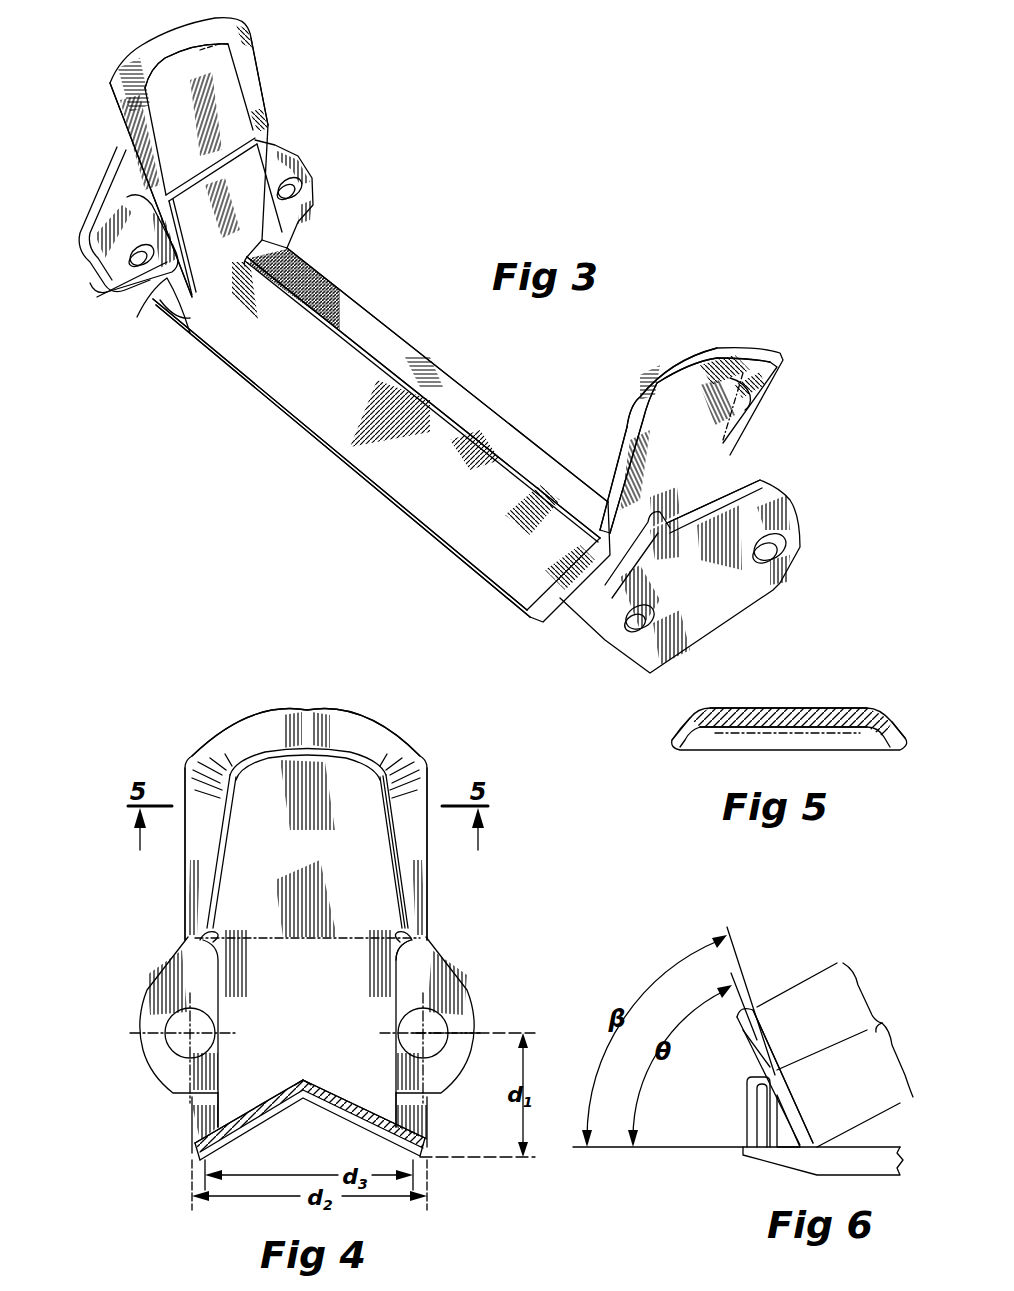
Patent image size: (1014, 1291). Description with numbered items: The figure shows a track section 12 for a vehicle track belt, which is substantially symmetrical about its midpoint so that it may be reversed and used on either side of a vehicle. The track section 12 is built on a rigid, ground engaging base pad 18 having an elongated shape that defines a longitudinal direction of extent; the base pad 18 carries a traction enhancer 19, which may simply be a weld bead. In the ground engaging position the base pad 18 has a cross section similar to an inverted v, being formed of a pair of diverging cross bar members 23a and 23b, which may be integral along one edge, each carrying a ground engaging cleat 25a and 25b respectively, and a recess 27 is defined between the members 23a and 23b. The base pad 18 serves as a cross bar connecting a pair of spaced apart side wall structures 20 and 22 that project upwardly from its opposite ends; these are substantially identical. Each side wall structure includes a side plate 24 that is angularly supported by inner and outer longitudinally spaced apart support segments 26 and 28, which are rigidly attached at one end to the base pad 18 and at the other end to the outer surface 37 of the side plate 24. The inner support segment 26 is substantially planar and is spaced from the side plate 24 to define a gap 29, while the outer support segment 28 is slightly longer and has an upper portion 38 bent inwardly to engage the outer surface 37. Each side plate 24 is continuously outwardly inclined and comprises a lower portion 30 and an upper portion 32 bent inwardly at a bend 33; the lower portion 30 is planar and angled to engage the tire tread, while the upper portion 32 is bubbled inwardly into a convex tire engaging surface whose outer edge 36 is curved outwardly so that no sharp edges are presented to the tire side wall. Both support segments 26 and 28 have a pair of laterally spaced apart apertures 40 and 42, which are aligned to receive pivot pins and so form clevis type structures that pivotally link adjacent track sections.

In FIG. 3, the track section 12 is at (425, 140).
In FIG. 4, the track section 12 is at (178, 720).
In FIG. 6, the track section 12 is at (838, 960).
In FIG. 3, the base pad 18 is at (347, 457).
In FIG. 4, the base pad 18 is at (287, 1082).
In FIG. 6, the base pad 18 is at (797, 1166).
In FIG. 3, the traction enhancer 19 is at (355, 340).
In FIG. 4, the traction enhancer 19 is at (305, 1078).
In FIG. 3, the side wall structure 20 is at (275, 72).
In FIG. 4, the side wall structure 20 is at (302, 712).
In FIG. 5, the side wall structure 20 is at (820, 708).
In FIG. 6, the side wall structure 20 is at (763, 998).
In FIG. 3, the side wall structure 22 is at (733, 350).
In FIG. 3, the cross bar member 23a is at (282, 360).
In FIG. 4, the cross bar member 23a is at (255, 1110).
In FIG. 3, the cross bar member 23b is at (410, 358).
In FIG. 4, the cross bar member 23b is at (370, 1110).
In FIG. 3, the side plate 24 is at (280, 120).
In FIG. 4, the side plate 24 is at (362, 722).
In FIG. 5, the side plate 24 is at (872, 710).
In FIG. 6, the side plate 24 is at (777, 1058).
In FIG. 3, the ground engaging cleat 25a is at (225, 358).
In FIG. 4, the ground engaging cleat 25a is at (200, 1162).
In FIG. 4, the ground engaging cleat 25b is at (420, 1152).
In FIG. 3, the inner support segment 26 is at (312, 168).
In FIG. 4, the inner support segment 26 is at (160, 983).
In FIG. 6, the inner support segment 26 is at (775, 1122).
In FIG. 4, the recess 27 is at (310, 1134).
In FIG. 3, the outer support segment 28 is at (772, 503).
In FIG. 6, the outer support segment 28 is at (747, 1112).
In FIG. 3, the gap 29 is at (158, 306).
In FIG. 3, the lower portion 30 is at (262, 235).
In FIG. 4, the lower portion 30 is at (398, 975).
In FIG. 6, the lower portion 30 is at (878, 1082).
In FIG. 3, the upper portion 32 is at (175, 75).
In FIG. 4, the upper portion 32 is at (420, 870).
In FIG. 5, the upper portion 32 is at (757, 708).
In FIG. 6, the upper portion 32 is at (830, 988).
In FIG. 3, the bend 33 is at (272, 138).
In FIG. 4, the bend 33 is at (210, 930).
In FIG. 6, the bend 33 is at (782, 1073).
In FIG. 3, the outer edge 36 is at (112, 98).
In FIG. 4, the outer edge 36 is at (402, 740).
In FIG. 5, the outer edge 36 is at (675, 742).
In FIG. 3, the outer surface 37 is at (742, 408).
In FIG. 5, the outer surface 37 is at (805, 727).
In FIG. 3, the upper portion 38 is at (116, 148).
In FIG. 6, the upper portion 38 is at (747, 1073).
In FIG. 3, the aperture 40 is at (130, 282).
In FIG. 4, the aperture 40 is at (170, 1032).
In FIG. 3, the aperture 42 is at (304, 194).
In FIG. 4, the aperture 42 is at (442, 1030).